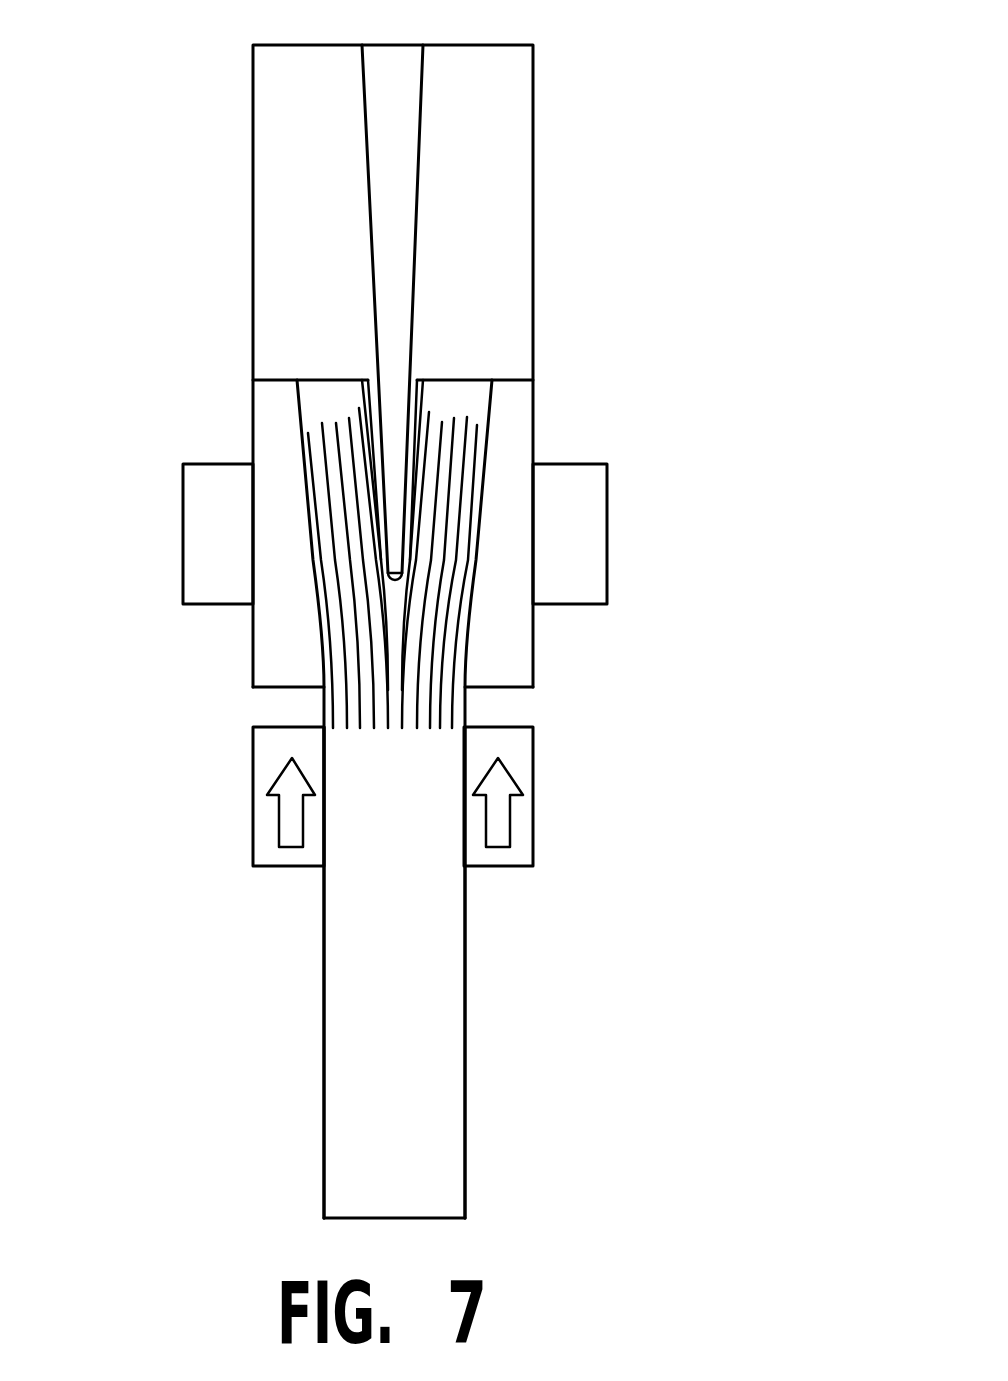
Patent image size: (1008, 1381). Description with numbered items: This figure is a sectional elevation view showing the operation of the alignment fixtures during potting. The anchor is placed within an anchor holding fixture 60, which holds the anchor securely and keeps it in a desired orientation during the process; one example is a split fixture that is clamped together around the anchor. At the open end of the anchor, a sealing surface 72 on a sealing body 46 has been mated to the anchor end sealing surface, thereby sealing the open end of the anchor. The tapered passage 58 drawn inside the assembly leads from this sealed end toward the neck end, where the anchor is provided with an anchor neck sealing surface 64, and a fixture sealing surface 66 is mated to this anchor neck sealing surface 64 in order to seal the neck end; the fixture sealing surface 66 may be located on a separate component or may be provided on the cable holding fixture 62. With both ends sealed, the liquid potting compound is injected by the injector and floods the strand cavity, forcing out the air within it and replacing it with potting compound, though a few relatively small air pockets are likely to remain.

The sealing body 46 is at (507, 228).
The sealing surface 72 is at (518, 374).
The tapered passage with fibers 58 is at (507, 384).
The anchor holding fixture 60 is at (200, 518).
The anchor neck sealing surface 64 is at (505, 686).
The fixture sealing surface 66 is at (505, 728).
The cable holding fixture 62 is at (270, 853).